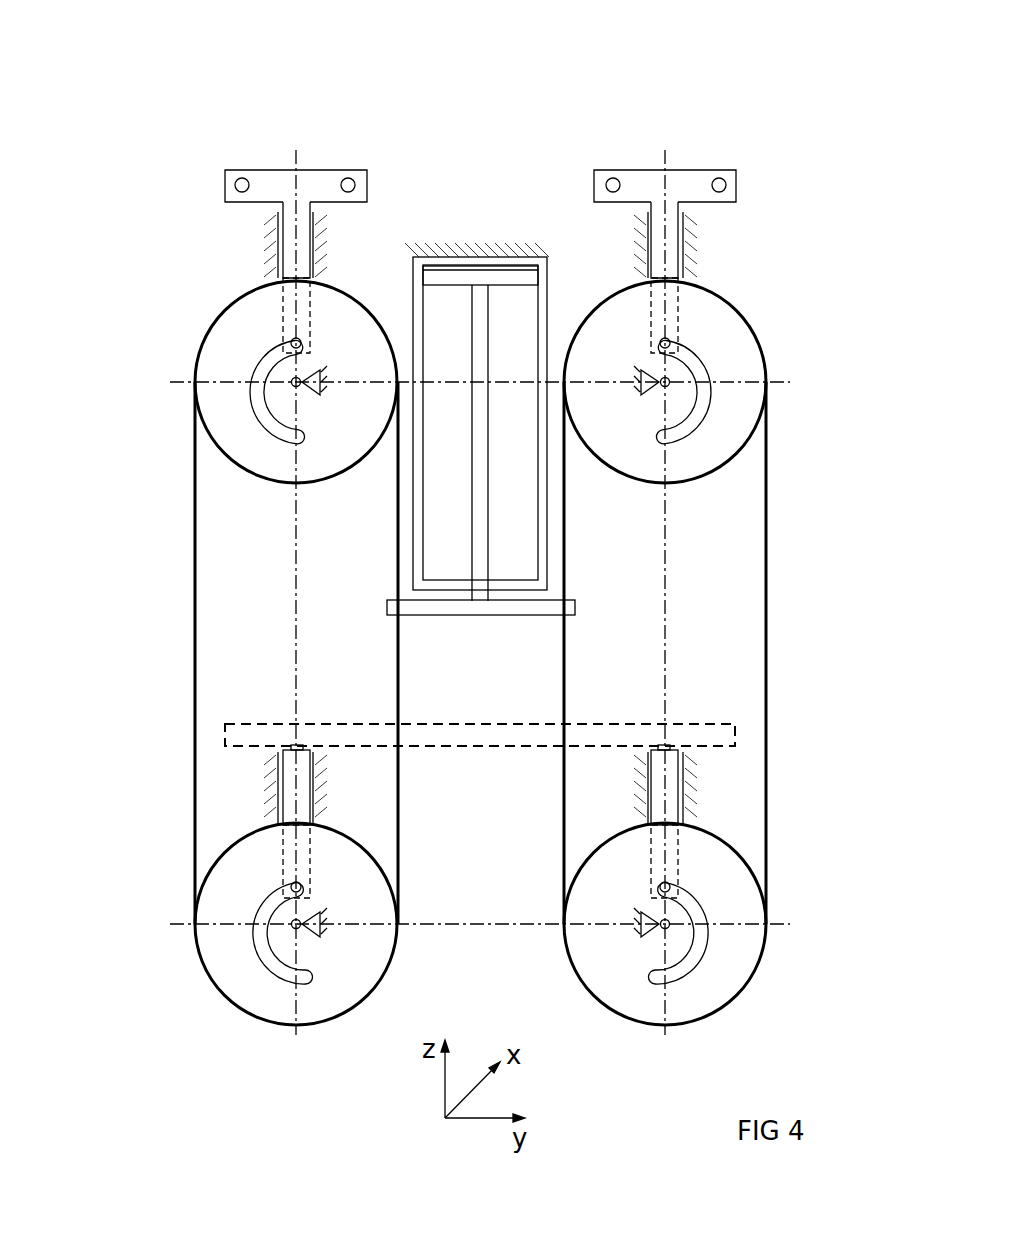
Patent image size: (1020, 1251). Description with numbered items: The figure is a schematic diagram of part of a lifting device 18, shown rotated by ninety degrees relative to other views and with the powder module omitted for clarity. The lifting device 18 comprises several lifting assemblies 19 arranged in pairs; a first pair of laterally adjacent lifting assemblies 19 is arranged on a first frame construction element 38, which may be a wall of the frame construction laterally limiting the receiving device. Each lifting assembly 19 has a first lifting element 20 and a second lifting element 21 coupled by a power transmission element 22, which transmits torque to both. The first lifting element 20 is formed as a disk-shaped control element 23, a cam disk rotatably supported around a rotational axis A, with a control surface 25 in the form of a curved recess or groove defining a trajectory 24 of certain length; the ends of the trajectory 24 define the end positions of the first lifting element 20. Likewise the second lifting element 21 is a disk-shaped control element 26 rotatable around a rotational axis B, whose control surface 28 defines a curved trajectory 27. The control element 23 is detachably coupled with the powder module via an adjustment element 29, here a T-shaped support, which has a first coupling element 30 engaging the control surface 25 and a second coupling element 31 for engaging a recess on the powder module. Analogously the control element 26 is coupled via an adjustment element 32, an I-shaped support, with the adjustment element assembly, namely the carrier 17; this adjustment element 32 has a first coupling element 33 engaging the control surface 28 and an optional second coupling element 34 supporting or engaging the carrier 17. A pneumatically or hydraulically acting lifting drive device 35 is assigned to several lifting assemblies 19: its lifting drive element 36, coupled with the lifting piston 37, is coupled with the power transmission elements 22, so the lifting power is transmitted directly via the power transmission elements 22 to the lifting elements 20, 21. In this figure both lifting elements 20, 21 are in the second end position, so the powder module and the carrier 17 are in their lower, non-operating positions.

The carrier 17 is at (471, 747).
The lifting device 18 is at (282, 82).
The lifting assembly 19 is at (150, 612).
The first lifting element 20 is at (481, 382).
The second lifting element 21 is at (481, 924).
The power transmission element 22 is at (194, 540).
The control element 23 is at (240, 325).
The trajectory 24 is at (481, 393).
The control surface 25 is at (275, 430).
The control element 26 is at (238, 992).
The trajectory 27 is at (485, 969).
The control surface 28 is at (277, 978).
The adjustment element 29 is at (292, 280).
The first coupling element 30 is at (290, 343).
The second coupling element 31 is at (349, 180).
The adjustment element 32 is at (288, 845).
The first coupling element 33 is at (290, 887).
The second coupling element 34 is at (292, 745).
The lifting drive device 35 is at (491, 402).
The lifting drive element 36 is at (434, 614).
The lifting piston 37 is at (483, 320).
The first frame construction element 38 is at (268, 240).
The rotational axis A is at (290, 382).
The rotational axis B is at (290, 924).